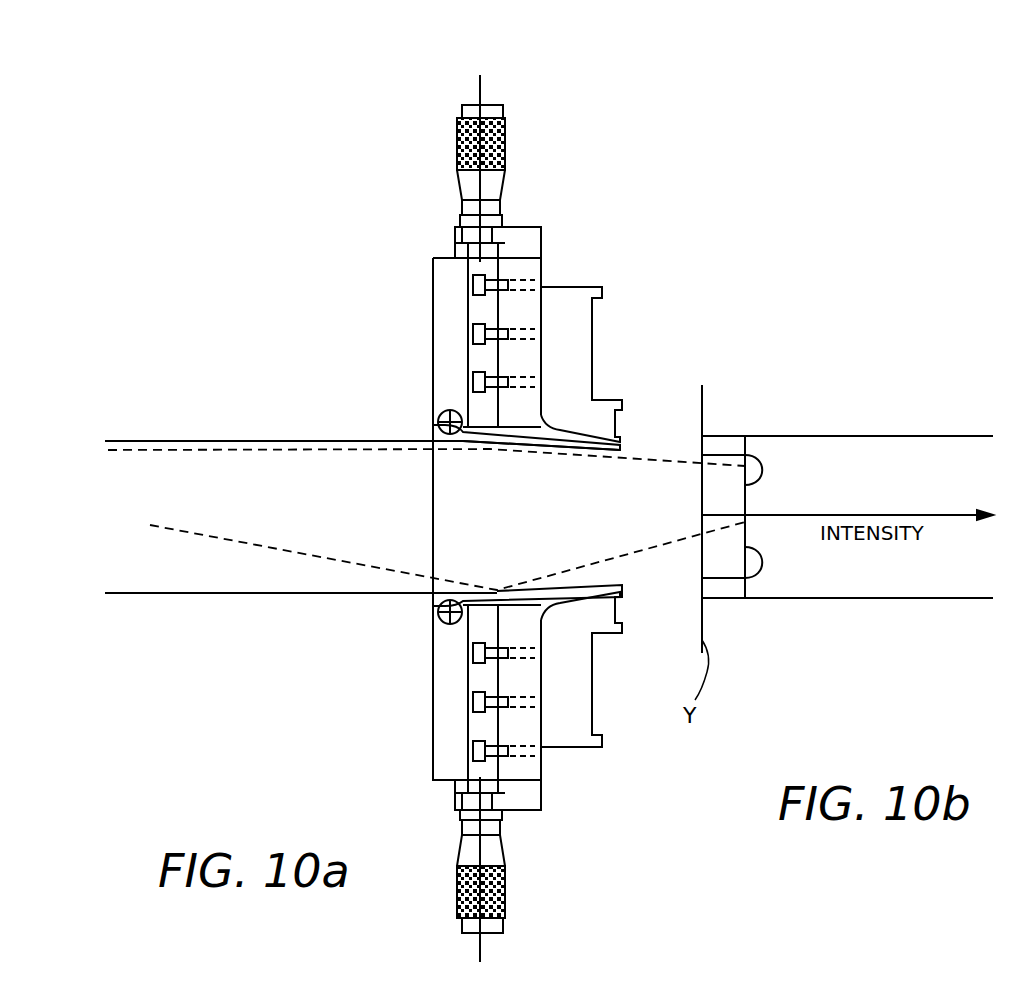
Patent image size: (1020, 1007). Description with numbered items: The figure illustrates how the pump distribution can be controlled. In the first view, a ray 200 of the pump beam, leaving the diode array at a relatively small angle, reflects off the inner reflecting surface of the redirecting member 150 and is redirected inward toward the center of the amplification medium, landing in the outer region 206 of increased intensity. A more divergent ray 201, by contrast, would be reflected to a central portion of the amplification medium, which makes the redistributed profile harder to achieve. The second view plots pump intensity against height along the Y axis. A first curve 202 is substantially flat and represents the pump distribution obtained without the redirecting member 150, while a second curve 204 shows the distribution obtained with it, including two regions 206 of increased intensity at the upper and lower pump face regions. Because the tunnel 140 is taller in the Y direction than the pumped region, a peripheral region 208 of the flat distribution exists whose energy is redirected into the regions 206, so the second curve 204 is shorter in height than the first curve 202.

In FIG. 10a, the tunnel 140 is at (128, 593).
In FIG. 10a, the redirecting member 150 is at (622, 450).
In FIG. 10a, the ray 200 is at (118, 451).
In FIG. 10a, the ray 201 is at (175, 530).
In FIG. 10b, the first curve 202 is at (746, 585).
In FIG. 10b, the second curve 204 is at (750, 483).
In FIG. 10b, the region of increased intensity 206 is at (767, 467).
In FIG. 10b, the peripheral region 208 is at (718, 448).